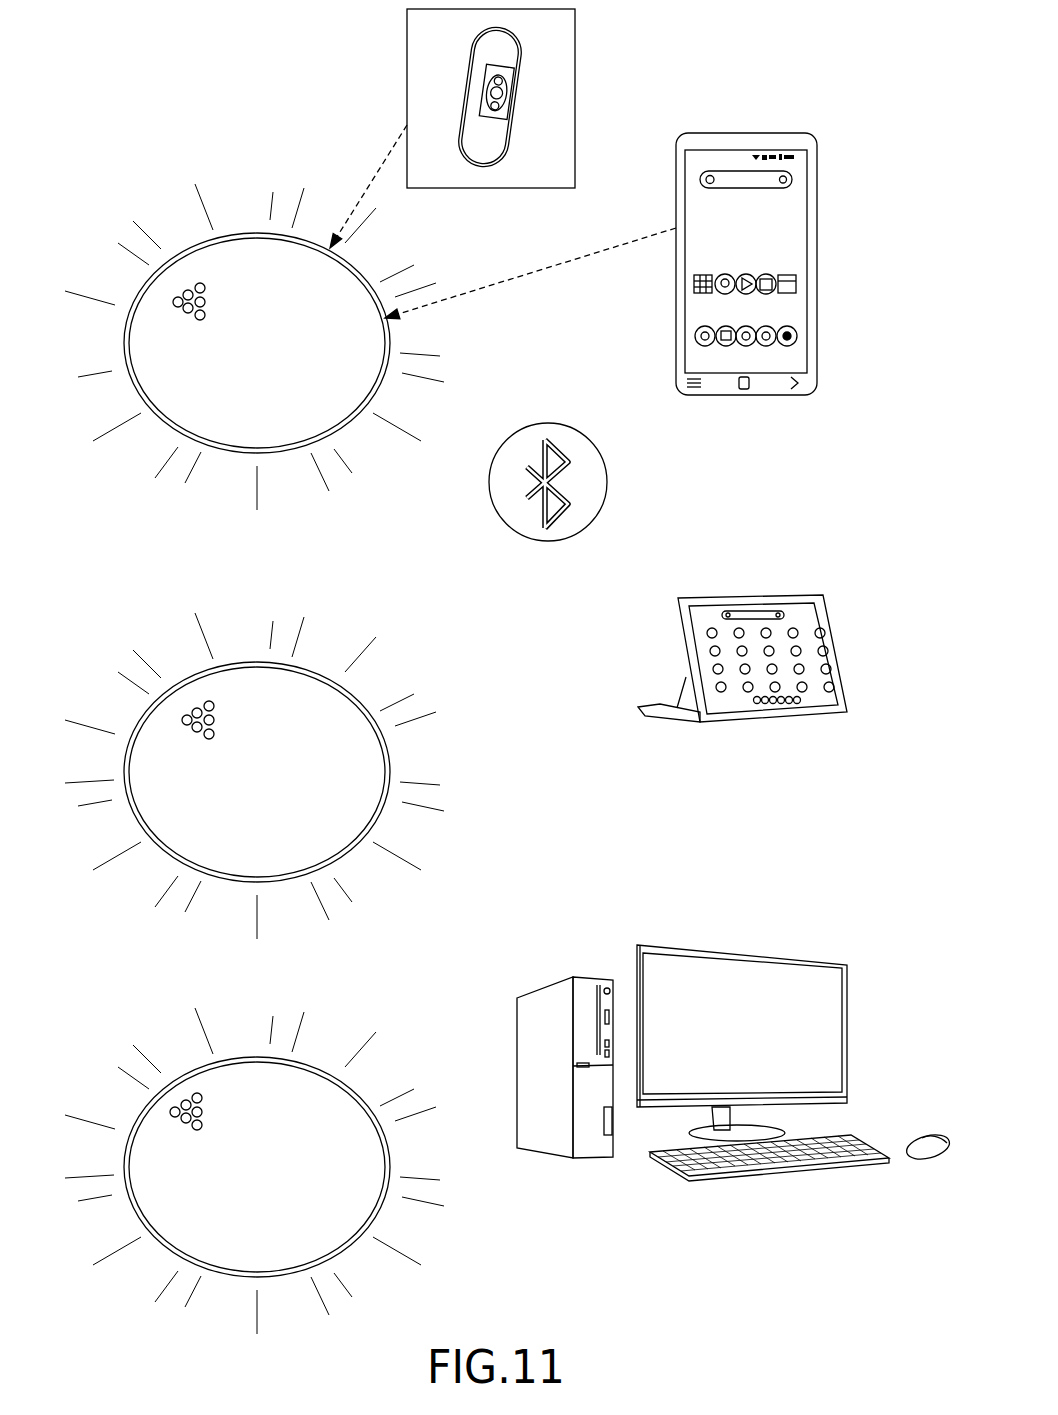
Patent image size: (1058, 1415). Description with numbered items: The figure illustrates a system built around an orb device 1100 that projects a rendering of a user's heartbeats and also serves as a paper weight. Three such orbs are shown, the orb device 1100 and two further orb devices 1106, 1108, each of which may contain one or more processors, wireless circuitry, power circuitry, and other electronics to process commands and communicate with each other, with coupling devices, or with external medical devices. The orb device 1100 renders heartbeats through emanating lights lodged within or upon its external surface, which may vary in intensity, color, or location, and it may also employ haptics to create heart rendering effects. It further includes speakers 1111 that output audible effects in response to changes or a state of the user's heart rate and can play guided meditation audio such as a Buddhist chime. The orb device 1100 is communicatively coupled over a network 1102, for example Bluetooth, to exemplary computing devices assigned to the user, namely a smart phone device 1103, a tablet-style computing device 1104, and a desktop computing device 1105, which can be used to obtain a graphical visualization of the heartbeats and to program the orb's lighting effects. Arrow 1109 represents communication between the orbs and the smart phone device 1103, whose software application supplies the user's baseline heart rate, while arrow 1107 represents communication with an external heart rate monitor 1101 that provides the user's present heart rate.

The orb device 1100 is at (254, 347).
The external heart rate monitor 1101 is at (497, 170).
The network 1102 is at (546, 541).
The smart phone device 1103 is at (817, 312).
The computing device 1104 is at (847, 650).
The computing device 1105 is at (847, 996).
The orb device 1106 is at (254, 776).
The arrow 1107 is at (362, 198).
The orb device 1108 is at (254, 1171).
The arrow 1109 is at (545, 270).
The speakers 1111 is at (163, 324).